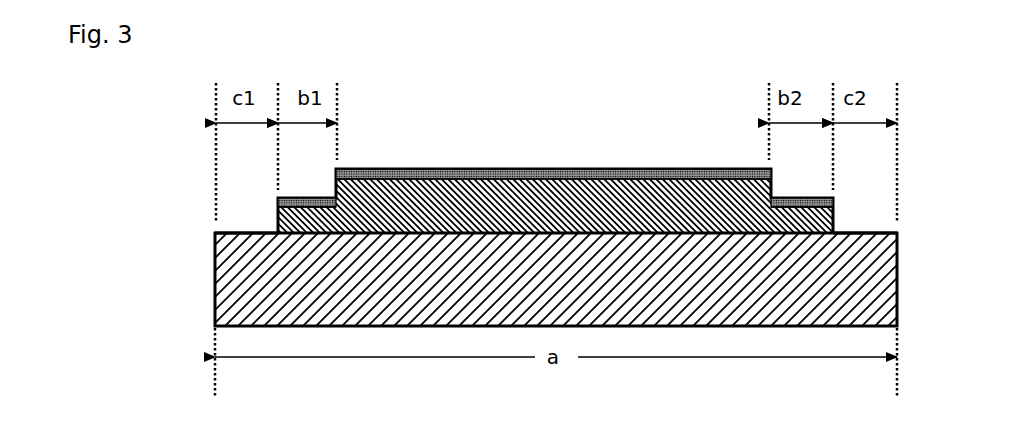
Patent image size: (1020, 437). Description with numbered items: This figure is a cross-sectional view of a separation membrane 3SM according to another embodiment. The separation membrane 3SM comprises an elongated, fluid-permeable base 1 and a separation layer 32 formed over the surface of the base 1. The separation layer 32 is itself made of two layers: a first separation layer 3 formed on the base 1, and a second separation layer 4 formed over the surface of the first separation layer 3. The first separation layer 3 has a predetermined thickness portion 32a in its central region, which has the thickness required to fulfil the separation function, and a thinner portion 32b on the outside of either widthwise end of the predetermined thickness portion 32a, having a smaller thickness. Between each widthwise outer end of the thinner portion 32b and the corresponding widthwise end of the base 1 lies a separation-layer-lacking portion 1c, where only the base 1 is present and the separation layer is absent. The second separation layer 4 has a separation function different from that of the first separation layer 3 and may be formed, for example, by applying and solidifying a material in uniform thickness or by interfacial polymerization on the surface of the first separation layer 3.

The base 1 is at (635, 305).
The separation-layer-lacking portion 1c is at (260, 237).
The first separation layer 3 is at (567, 220).
The separation membrane 3SM is at (660, 145).
The second separation layer 4 is at (460, 169).
The separation layer 32 is at (540, 163).
The predetermined thickness portion 32a is at (405, 193).
The thinner portion 32b is at (315, 212).